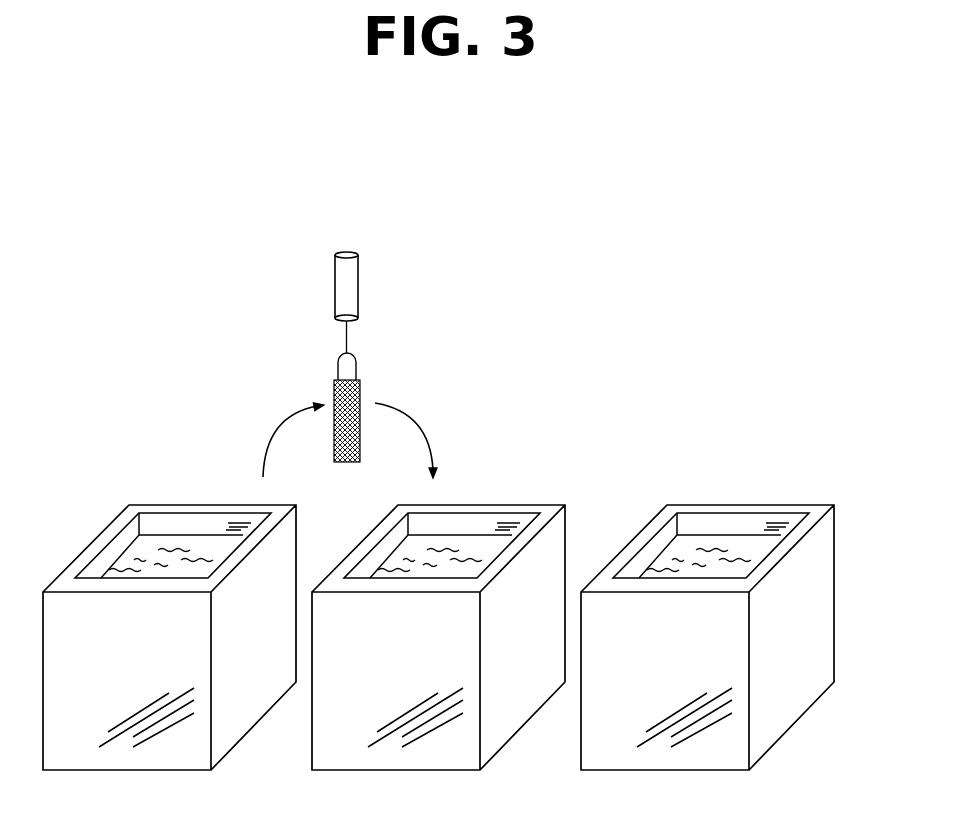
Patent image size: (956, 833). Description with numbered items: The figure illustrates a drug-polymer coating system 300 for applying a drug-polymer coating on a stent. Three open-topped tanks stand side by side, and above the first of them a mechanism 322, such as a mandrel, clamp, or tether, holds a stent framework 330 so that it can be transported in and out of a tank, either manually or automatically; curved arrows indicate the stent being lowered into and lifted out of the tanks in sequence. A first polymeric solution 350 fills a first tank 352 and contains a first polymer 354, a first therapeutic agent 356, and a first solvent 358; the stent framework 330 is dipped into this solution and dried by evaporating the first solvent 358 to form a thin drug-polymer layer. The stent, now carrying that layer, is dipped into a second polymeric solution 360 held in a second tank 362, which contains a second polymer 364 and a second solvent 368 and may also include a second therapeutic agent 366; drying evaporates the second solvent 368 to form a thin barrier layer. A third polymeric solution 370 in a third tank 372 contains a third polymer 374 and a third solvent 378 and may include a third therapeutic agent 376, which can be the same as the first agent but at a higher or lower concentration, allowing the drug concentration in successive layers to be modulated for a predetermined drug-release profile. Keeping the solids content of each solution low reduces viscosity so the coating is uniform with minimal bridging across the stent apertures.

The drug-polymer coating system 300 is at (160, 210).
The mechanism 322 is at (358, 283).
The stent framework 330 is at (360, 382).
The first polymeric solution 350 is at (217, 533).
The first tank 352 is at (203, 502).
The first polymer 354 is at (155, 533).
The first therapeutic agent 356 is at (138, 548).
The first solvent 358 is at (125, 558).
The second polymeric solution 360 is at (458, 537).
The second tank 362 is at (540, 500).
The second polymer 364 is at (428, 537).
The second therapeutic agent 366 is at (405, 550).
The second solvent 368 is at (393, 560).
The third polymeric solution 370 is at (723, 535).
The third tank 372 is at (807, 502).
The third polymer 374 is at (692, 540).
The third therapeutic agent 376 is at (667, 548).
The third solvent 378 is at (653, 558).